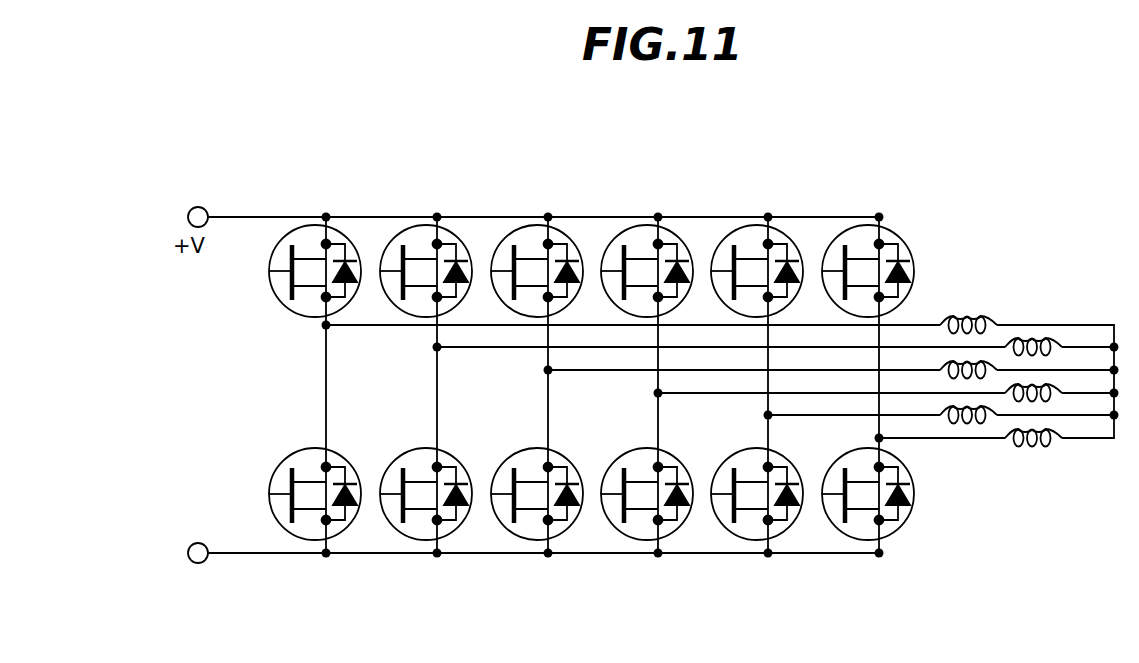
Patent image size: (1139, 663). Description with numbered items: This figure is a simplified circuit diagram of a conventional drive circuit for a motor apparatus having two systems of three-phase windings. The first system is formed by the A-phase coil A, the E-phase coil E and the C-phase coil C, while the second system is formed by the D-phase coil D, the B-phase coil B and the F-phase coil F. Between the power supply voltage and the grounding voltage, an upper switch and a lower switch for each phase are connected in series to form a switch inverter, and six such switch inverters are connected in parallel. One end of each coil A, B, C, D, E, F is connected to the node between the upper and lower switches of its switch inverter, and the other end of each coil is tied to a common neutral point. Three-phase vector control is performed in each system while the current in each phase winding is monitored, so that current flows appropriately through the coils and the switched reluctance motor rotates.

The A-phase coil A is at (968, 312).
The B-phase coil B is at (1040, 342).
The C-phase coil C is at (959, 364).
The D-phase coil D is at (1040, 401).
The E-phase coil E is at (960, 408).
The F-phase coil F is at (1039, 446).